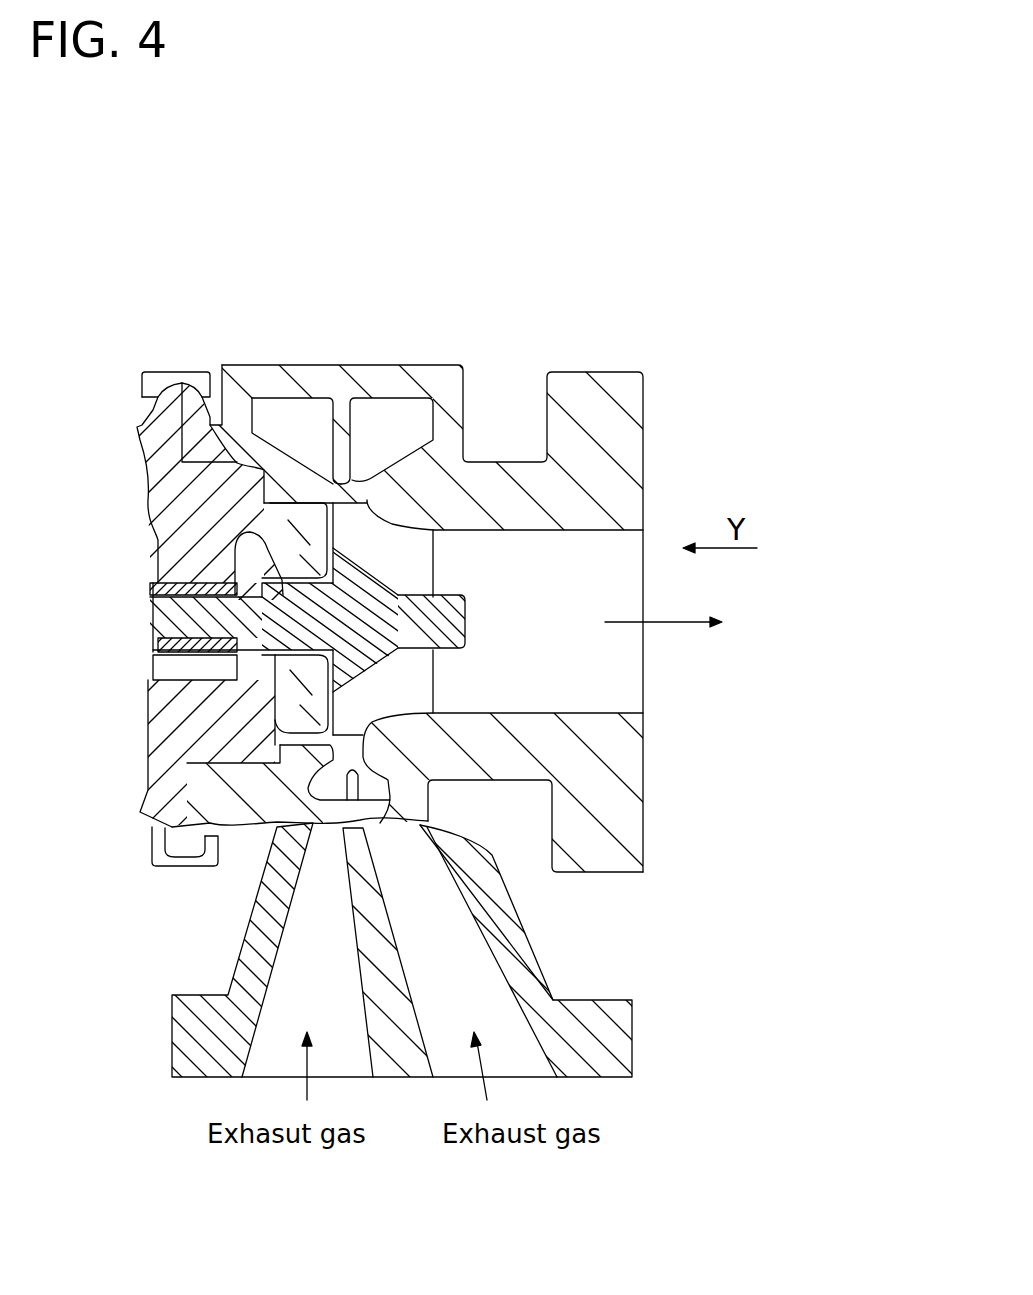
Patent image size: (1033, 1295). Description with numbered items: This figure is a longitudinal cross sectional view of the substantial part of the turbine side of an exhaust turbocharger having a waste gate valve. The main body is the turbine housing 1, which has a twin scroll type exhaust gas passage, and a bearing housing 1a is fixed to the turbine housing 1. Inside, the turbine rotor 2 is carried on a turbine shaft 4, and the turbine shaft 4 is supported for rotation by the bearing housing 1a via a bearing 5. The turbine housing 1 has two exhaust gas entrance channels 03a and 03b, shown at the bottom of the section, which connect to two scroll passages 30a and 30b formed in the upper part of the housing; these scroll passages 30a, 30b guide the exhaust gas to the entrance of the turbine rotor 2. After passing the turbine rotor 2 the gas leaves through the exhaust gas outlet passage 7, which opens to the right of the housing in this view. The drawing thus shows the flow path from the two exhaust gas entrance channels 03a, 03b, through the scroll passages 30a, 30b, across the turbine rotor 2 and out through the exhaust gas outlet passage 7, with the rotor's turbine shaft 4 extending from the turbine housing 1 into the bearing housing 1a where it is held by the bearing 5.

The turbine housing 1 is at (620, 439).
The bearing housing 1a is at (180, 498).
The turbine rotor 2 is at (393, 563).
The turbine shaft 4 is at (175, 598).
The bearing 5 is at (175, 642).
The exhaust gas outlet passage 7 is at (593, 665).
The scroll passage 30a is at (300, 442).
The scroll passage 30b is at (382, 452).
The exhaust gas entrance channel 03a is at (317, 915).
The exhaust gas entrance channel 03b is at (453, 937).